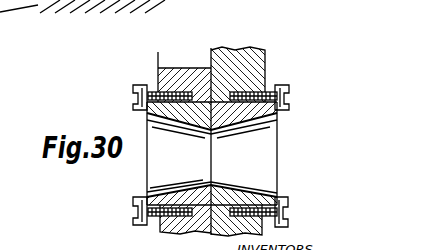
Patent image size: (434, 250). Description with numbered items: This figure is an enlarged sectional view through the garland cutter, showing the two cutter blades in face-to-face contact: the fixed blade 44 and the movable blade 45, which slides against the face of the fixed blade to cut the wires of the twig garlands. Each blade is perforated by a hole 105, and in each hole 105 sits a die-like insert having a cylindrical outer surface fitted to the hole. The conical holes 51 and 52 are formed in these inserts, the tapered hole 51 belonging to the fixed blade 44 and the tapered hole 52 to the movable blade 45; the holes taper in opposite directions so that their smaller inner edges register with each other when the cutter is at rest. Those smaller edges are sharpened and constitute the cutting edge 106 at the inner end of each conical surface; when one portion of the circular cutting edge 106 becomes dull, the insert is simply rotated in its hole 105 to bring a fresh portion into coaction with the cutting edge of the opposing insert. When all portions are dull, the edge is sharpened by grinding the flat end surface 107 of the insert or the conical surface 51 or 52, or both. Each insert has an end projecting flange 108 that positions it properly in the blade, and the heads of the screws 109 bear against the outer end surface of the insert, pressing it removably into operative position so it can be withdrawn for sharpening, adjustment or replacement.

The fixed blade 44 is at (241, 50).
The movable blade 45 is at (178, 68).
The tapered hole 51 is at (253, 156).
The tapered hole 52 is at (188, 156).
The hole 105 is at (174, 192).
The cutting edge 106 is at (212, 188).
The flat end surface 107 is at (255, 190).
The end projecting flange 108 is at (282, 205).
The screws 109 is at (284, 223).